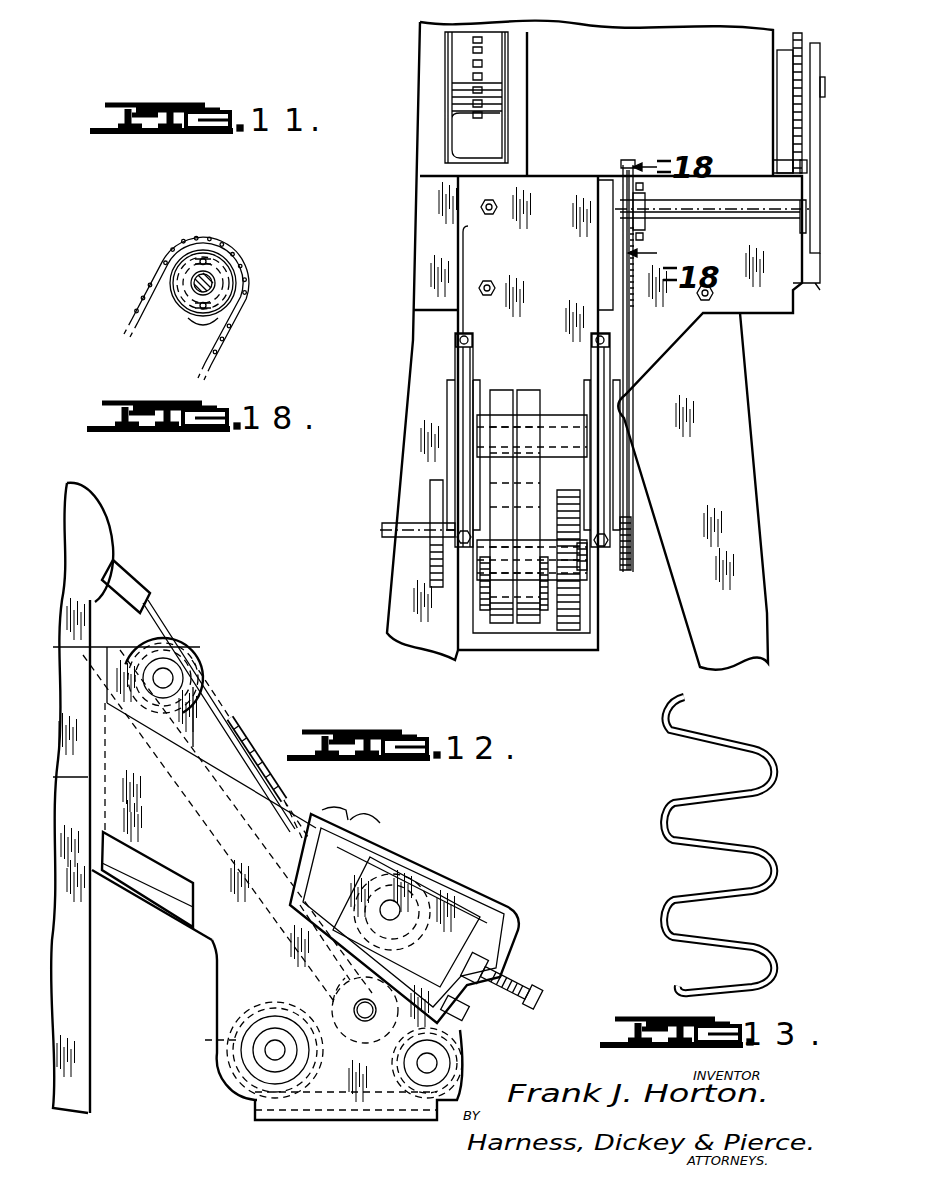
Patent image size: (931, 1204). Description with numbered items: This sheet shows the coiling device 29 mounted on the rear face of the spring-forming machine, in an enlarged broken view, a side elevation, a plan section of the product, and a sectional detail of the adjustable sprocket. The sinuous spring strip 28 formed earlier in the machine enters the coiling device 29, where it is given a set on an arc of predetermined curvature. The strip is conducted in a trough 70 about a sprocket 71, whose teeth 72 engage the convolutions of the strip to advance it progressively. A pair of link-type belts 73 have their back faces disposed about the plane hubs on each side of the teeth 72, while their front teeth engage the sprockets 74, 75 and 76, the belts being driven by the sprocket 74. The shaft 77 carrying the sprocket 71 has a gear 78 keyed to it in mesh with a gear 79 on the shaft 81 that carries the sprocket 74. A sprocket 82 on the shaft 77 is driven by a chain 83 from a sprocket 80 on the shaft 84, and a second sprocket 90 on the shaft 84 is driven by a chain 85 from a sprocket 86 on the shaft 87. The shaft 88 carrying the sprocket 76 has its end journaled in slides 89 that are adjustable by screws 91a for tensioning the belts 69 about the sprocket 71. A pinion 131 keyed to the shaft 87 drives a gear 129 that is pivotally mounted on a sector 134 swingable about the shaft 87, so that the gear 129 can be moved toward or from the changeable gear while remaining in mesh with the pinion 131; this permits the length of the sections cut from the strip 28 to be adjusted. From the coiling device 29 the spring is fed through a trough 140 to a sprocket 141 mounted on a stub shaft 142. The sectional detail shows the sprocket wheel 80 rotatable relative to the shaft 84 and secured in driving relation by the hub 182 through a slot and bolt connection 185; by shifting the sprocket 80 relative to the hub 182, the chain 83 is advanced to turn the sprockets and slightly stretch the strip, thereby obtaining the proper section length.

In FIG. 13, the sinuous spring strip 28 is at (765, 846).
In FIG. 11, the coiling device 29 is at (437, 437).
In FIG. 12, the coiling device 29 is at (385, 846).
In FIG. 12, the belts 69 is at (291, 1093).
In FIG. 12, the trough 70 is at (230, 927).
In FIG. 12, the sprocket 71 is at (275, 1039).
In FIG. 12, the teeth 72 is at (365, 977).
In FIG. 11, the link-type belts 73 is at (505, 390).
In FIG. 11, the sprocket 74 is at (513, 497).
In FIG. 12, the sprocket 74 is at (462, 1038).
In FIG. 11, the sprocket 75 is at (528, 390).
In FIG. 12, the sprocket 75 is at (243, 1053).
In FIG. 11, the sprocket 76 is at (517, 393).
In FIG. 12, the sprocket 76 is at (427, 866).
In FIG. 11, the shaft 77 is at (613, 530).
In FIG. 11, the gear 78 is at (567, 493).
In FIG. 11, the gear 79 is at (573, 600).
In FIG. 11, the sprocket wheel 80 is at (632, 167).
In FIG. 18, the sprocket wheel 80 is at (200, 322).
In FIG. 11, the shaft 81 is at (587, 587).
In FIG. 12, the shaft 81 is at (430, 1063).
In FIG. 11, the sprocket 82 is at (622, 543).
In FIG. 11, the chain 83 is at (640, 390).
In FIG. 18, the chain 83 is at (218, 341).
In FIG. 12, the chain 83 is at (247, 730).
In FIG. 11, the shaft 84 is at (663, 228).
In FIG. 18, the shaft 84 is at (215, 290).
In FIG. 12, the shaft 84 is at (167, 675).
In FIG. 11, the chain 85 is at (803, 133).
In FIG. 11, the sprocket 86 is at (814, 62).
In FIG. 11, the shaft 87 is at (822, 90).
In FIG. 11, the shaft 88 is at (560, 427).
In FIG. 12, the shaft 88 is at (391, 905).
In FIG. 12, the slides 89 is at (450, 917).
In FIG. 11, the second sprocket 90 is at (815, 255).
In FIG. 12, the screws 91a is at (517, 978).
In FIG. 11, the gear 129 is at (805, 165).
In FIG. 11, the pinion 131 is at (797, 105).
In FIG. 11, the sector 134 is at (788, 160).
In FIG. 11, the trough 140 is at (497, 137).
In FIG. 12, the trough 140 is at (127, 573).
In FIG. 11, the sprocket 141 is at (513, 103).
In FIG. 11, the stub shaft 142 is at (517, 67).
In FIG. 18, the hub 182 is at (228, 270).
In FIG. 18, the slot and bolt connection 185 is at (205, 257).